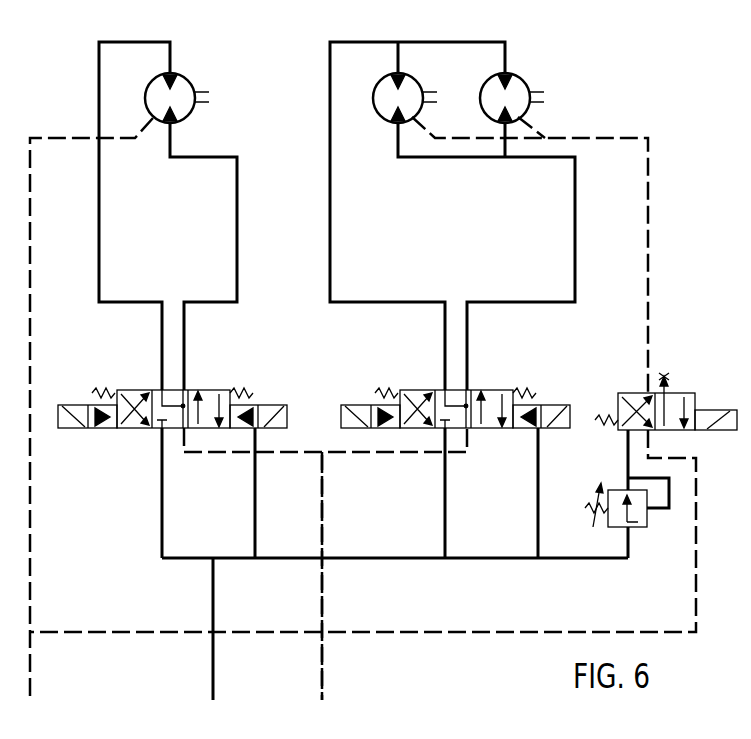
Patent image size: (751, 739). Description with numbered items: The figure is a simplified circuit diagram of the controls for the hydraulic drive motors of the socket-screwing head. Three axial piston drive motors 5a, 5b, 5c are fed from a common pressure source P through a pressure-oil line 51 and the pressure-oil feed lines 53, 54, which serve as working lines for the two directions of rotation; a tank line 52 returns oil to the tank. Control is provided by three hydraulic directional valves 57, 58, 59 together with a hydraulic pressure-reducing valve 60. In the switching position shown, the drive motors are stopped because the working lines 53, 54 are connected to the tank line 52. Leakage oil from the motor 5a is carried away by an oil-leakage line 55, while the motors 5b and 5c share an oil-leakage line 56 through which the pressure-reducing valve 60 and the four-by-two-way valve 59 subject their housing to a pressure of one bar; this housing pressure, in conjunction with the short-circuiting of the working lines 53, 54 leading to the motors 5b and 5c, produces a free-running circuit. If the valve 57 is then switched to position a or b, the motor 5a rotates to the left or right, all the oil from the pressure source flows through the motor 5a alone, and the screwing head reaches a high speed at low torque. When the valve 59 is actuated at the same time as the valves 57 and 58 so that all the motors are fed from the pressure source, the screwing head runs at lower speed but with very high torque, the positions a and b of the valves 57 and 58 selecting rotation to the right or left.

The hydraulic drive motor 5a is at (191, 80).
The hydraulic drive motor 5b is at (376, 88).
The hydraulic drive motor 5c is at (525, 80).
The pressure-oil line 51 is at (211, 659).
The tank line 52 is at (324, 660).
The pressure-oil feed line 53 is at (101, 235).
The pressure-oil feed line 54 is at (239, 235).
The oil-leakage line 55 is at (32, 285).
The oil-leakage line 56 is at (650, 186).
The hydraulic directional valve 57 is at (198, 390).
The hydraulic directional valve 58 is at (481, 390).
The hydraulic directional valve 59 is at (695, 394).
The hydraulic pressure-reducing valve 60 is at (647, 520).